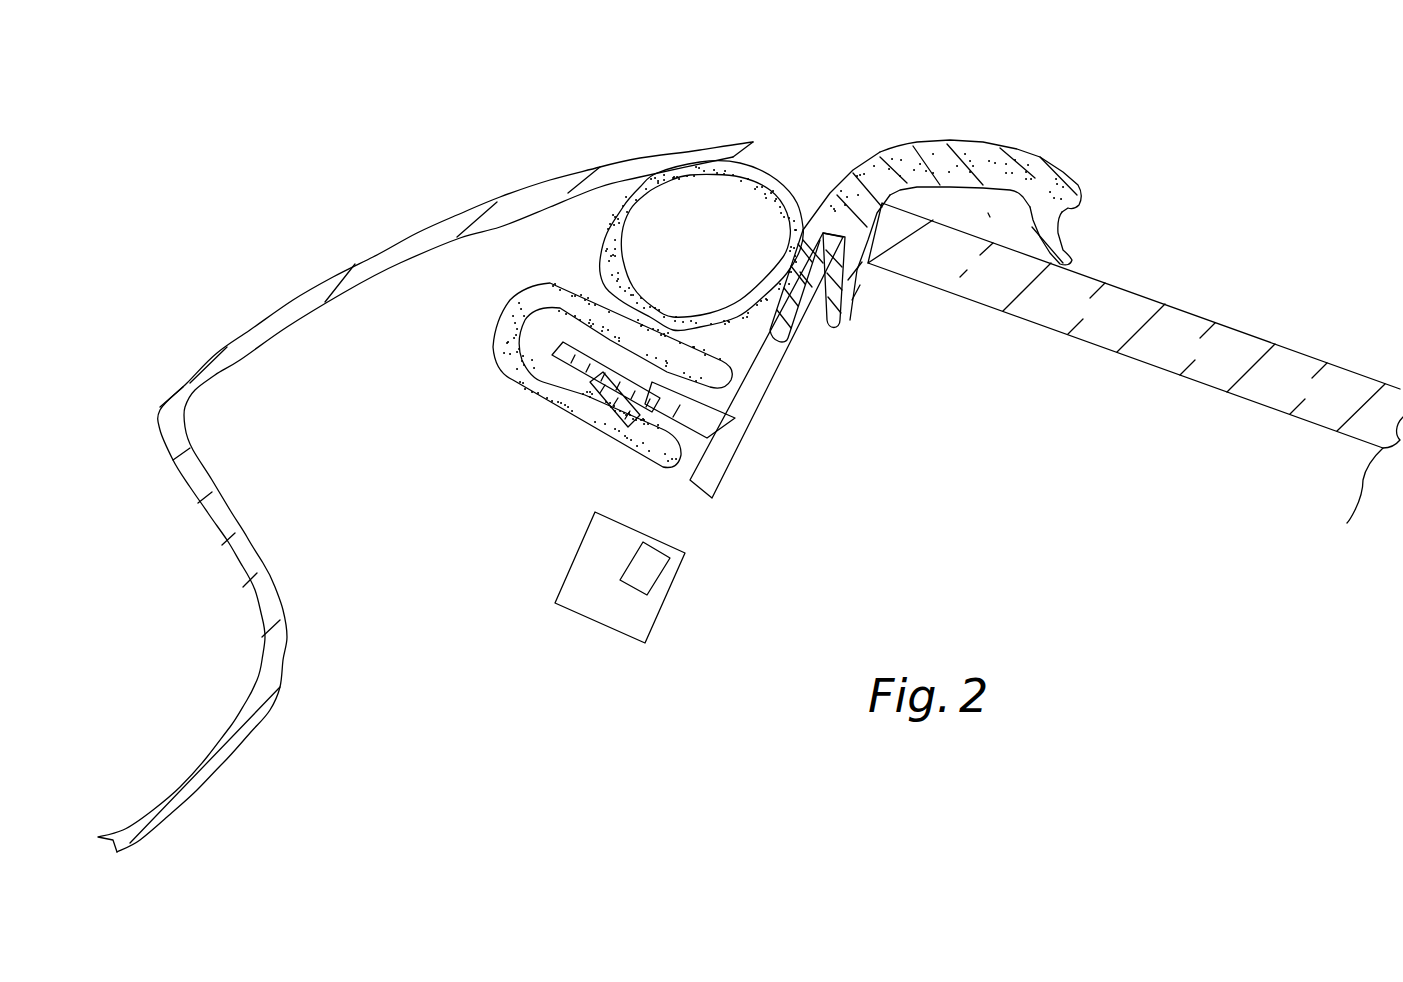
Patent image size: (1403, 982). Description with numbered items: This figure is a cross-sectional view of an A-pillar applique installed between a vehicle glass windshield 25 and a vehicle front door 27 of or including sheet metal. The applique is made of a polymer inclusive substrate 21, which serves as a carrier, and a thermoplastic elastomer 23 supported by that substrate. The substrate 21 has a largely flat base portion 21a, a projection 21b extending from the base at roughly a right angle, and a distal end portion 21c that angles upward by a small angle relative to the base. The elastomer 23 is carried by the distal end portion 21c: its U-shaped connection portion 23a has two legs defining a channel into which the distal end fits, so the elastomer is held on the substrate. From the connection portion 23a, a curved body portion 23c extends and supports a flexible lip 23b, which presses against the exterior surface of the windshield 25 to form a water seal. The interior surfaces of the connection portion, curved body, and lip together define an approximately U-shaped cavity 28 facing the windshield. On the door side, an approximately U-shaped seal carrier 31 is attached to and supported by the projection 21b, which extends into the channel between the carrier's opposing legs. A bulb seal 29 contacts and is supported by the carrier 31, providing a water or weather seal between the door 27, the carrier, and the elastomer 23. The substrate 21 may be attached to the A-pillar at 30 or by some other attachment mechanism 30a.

The polymer inclusive substrate 21 is at (729, 364).
The base portion 21a is at (797, 337).
The projection 21b is at (607, 378).
The distal end portion 21c is at (820, 285).
The thermoplastic elastomer 23 is at (968, 184).
The U-shaped connection portion 23a is at (808, 192).
The flexible lip 23b is at (1053, 229).
The curved body portion 23c is at (975, 155).
The vehicle glass windshield 25 is at (1168, 322).
The vehicle front door 27 is at (457, 217).
The U-shaped cavity 28 is at (988, 213).
The bulb seal 29 is at (637, 187).
The attachment location 30 is at (686, 577).
The attachment mechanism 30a is at (663, 603).
The U-shaped seal carrier 31 is at (533, 391).